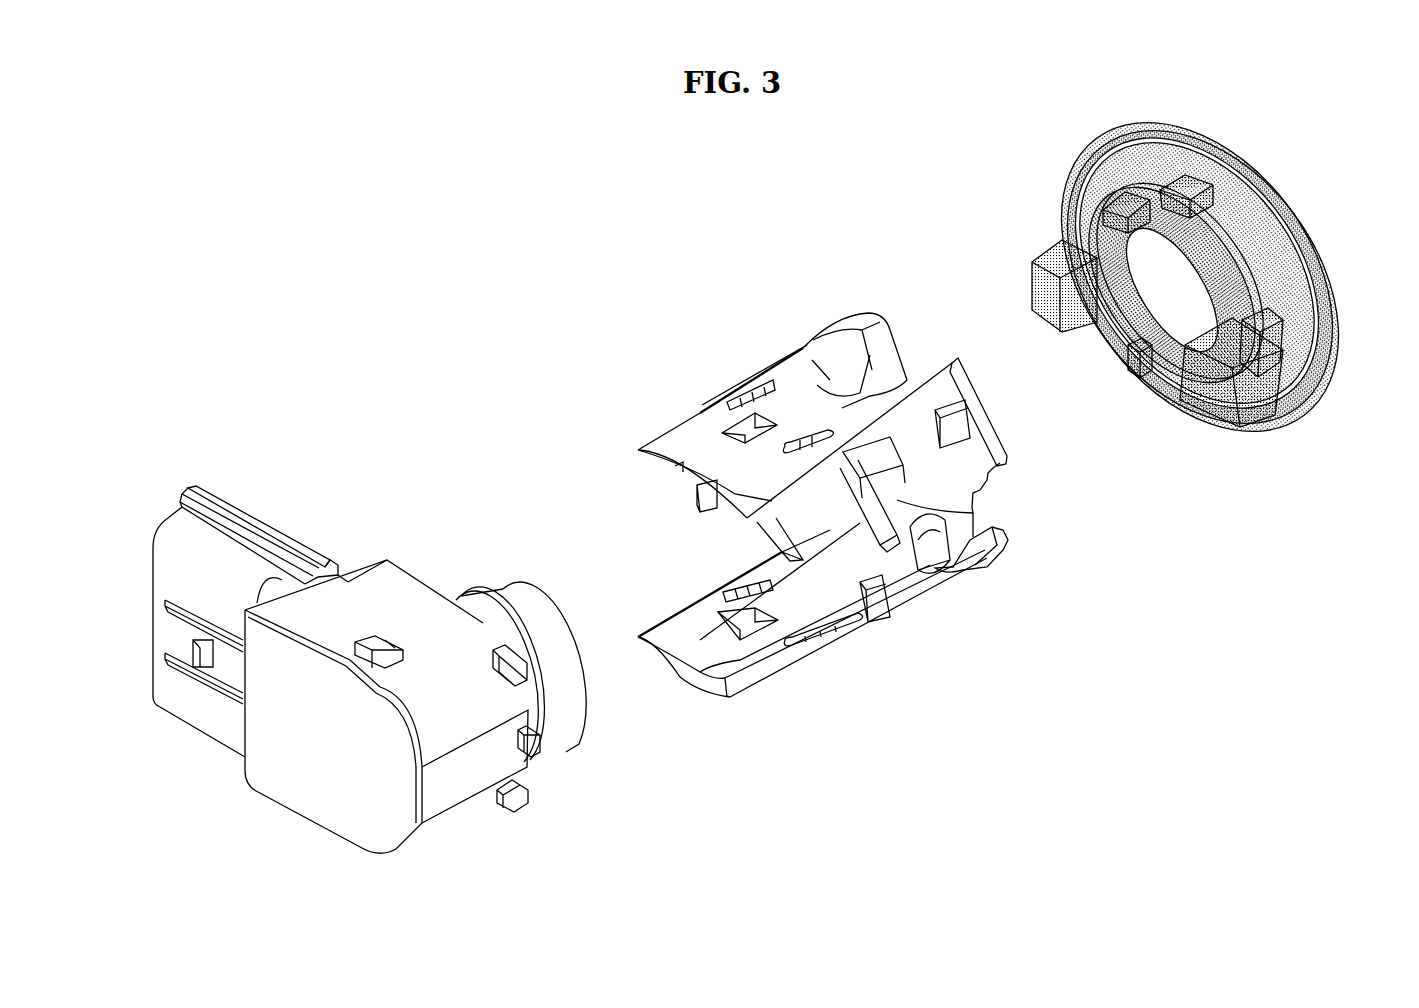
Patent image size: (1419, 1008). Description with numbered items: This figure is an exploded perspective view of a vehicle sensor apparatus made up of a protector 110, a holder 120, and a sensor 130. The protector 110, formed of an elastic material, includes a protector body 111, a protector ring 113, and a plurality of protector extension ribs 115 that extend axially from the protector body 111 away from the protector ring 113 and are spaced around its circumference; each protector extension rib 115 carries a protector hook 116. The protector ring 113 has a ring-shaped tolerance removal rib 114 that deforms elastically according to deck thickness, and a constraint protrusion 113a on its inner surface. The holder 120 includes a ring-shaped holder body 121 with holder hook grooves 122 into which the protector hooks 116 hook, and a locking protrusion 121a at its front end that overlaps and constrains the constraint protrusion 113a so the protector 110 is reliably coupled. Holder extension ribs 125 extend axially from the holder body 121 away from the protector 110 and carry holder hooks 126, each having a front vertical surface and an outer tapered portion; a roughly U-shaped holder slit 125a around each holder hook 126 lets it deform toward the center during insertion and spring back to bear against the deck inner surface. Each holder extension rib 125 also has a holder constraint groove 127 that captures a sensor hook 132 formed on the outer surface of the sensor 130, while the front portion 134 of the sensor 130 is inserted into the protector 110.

The protector 110 is at (1262, 156).
The protector body 111 is at (1227, 268).
The protector ring 113 is at (1300, 240).
The constraint protrusion 113a is at (1092, 160).
The tolerance removal rib 114 is at (1280, 432).
The protector extension rib 115 is at (1078, 237).
The protector hook 116 is at (1037, 272).
The holder 120 is at (808, 302).
The holder body 121 is at (897, 500).
The locking protrusion 121a is at (1005, 548).
The holder hook groove 122 is at (930, 540).
The holder extension rib 125 is at (695, 445).
The holder slit 125a is at (797, 432).
The holder hook 126 is at (862, 348).
The holder constraint groove 127 is at (737, 428).
The sensor 130 is at (369, 628).
The sensor hook 132 is at (395, 652).
The front portion 134 is at (566, 612).